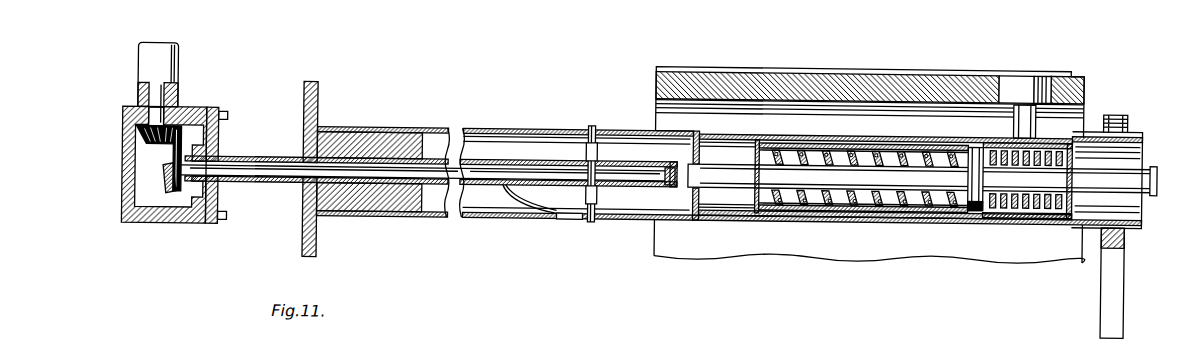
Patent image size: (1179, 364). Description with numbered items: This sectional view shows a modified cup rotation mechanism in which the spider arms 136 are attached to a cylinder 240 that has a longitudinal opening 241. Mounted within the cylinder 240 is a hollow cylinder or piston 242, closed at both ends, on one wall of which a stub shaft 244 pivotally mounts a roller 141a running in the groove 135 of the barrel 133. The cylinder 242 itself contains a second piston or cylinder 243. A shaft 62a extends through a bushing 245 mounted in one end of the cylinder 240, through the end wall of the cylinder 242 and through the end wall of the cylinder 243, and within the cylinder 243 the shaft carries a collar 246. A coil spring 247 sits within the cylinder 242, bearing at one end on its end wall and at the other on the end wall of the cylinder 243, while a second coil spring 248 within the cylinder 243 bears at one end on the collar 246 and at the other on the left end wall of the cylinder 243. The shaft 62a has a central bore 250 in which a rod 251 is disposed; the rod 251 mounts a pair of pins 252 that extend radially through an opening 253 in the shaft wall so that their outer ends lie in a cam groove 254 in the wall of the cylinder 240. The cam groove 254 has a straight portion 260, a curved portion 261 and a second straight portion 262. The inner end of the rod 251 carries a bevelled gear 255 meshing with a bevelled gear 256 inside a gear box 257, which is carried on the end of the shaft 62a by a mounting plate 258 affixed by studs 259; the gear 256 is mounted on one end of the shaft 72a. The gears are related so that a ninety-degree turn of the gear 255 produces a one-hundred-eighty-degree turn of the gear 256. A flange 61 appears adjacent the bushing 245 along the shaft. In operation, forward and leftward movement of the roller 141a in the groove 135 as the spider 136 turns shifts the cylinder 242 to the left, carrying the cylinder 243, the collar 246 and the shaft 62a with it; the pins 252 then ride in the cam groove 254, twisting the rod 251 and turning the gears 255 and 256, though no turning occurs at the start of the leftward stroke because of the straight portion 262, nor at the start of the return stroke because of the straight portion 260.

The shaft 72a is at (150, 105).
The bevelled gear 256 is at (138, 149).
The gear box 257 is at (134, 211).
The bevelled gear 255 is at (176, 198).
The studs 259 is at (227, 121).
The bushing 245 is at (312, 150).
The mounting plate 258 is at (218, 144).
The central bore 250 is at (263, 182).
The flange 61 is at (304, 247).
The rod 251 is at (383, 170).
The cam groove 254 is at (592, 127).
The pins 252 is at (588, 150).
The opening 253 is at (590, 193).
The longitudinal opening 241 is at (690, 128).
The straight portion 260 is at (480, 191).
The curved portion 261 is at (517, 208).
The second straight portion 262 is at (576, 220).
The barrel 133 is at (946, 72).
The groove 135 is at (1006, 80).
The roller 141a is at (1041, 80).
The stub shaft 244 is at (1014, 116).
The cylinder 240 is at (1132, 130).
The shaft 62a is at (725, 180).
The second coil spring 248 is at (826, 206).
The second piston or cylinder 243 is at (900, 203).
The collar 246 is at (972, 210).
The hollow cylinder or piston 242 is at (1024, 210).
The coil spring 247 is at (1058, 212).
The spider arms 136 is at (1112, 287).